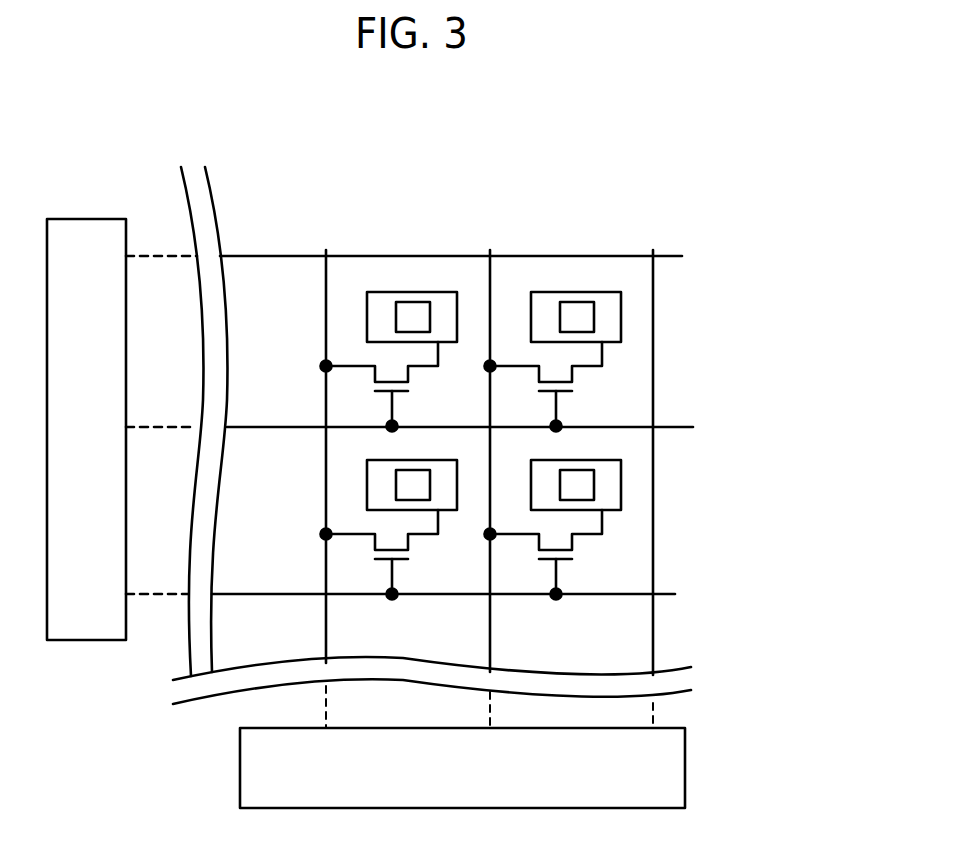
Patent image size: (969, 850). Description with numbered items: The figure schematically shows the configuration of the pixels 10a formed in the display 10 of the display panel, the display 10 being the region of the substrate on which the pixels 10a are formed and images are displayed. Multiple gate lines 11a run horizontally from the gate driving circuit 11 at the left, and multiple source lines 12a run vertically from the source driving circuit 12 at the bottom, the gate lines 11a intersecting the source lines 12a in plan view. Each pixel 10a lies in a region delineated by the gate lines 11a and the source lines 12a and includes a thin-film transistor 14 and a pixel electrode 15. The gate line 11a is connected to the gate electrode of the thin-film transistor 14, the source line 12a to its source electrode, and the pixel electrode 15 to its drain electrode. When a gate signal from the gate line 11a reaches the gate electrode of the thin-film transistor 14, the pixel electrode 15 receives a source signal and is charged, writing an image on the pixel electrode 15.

The display 10 is at (561, 198).
The pixel 10a is at (456, 272).
The gate driving circuit 11 is at (76, 219).
The gate line 11a is at (403, 256).
The source driving circuit 12 is at (685, 749).
The source line 12a is at (327, 624).
The thin-film transistor 14 is at (373, 360).
The pixel electrode 15 is at (413, 302).